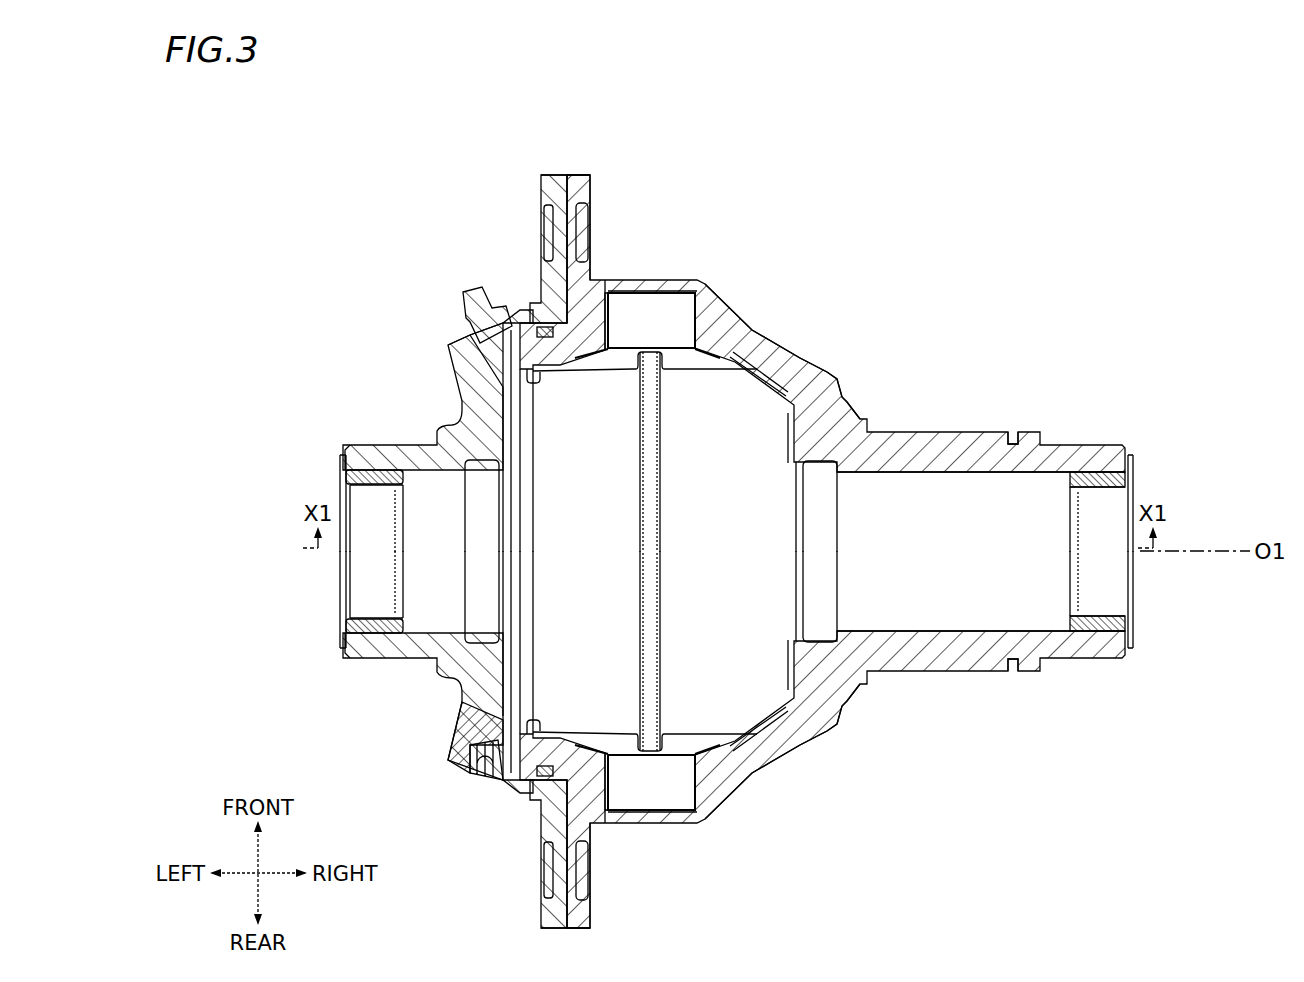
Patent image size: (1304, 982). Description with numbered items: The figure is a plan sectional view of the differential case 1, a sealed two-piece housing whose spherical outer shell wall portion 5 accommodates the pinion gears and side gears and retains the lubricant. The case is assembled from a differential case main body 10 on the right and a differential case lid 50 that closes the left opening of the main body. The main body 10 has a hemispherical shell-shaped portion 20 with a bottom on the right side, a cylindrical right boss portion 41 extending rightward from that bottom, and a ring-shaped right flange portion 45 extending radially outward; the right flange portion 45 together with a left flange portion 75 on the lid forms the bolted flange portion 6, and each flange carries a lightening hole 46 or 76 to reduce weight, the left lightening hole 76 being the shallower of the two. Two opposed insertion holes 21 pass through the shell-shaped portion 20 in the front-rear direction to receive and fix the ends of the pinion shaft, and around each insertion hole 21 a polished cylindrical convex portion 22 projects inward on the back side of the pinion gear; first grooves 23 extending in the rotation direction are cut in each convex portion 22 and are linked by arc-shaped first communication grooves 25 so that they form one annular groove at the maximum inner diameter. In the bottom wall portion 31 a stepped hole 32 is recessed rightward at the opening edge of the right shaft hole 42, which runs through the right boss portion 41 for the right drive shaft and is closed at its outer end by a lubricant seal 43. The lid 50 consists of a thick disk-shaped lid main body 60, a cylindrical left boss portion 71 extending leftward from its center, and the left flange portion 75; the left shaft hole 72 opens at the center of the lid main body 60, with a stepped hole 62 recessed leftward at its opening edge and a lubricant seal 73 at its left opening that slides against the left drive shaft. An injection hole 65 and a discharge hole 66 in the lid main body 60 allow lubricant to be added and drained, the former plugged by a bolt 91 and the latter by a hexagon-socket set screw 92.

The differential case 1 is at (383, 180).
The outer shell wall portion 5 is at (722, 298).
The flange portion 6 is at (611, 131).
The differential case main body 10 is at (806, 360).
The hemispherical shell-shaped portion 20 is at (752, 330).
The insertion hole 21 is at (693, 320).
The convex portion 22 is at (733, 365).
The first groove 23 is at (652, 360).
The first communication groove 25 is at (652, 547).
The bottom wall portion 31 is at (830, 417).
The stepped hole 32 is at (822, 470).
The right boss portion 41 is at (958, 675).
The right shaft hole 42 is at (1022, 625).
The lubricant seal 43 is at (1100, 640).
The right flange portion 45 is at (580, 185).
The lightening hole 46 is at (583, 236).
The differential case lid 50 is at (436, 415).
The lid main body 60 is at (452, 714).
The stepped hole 62 is at (483, 463).
The injection hole 65 is at (497, 371).
The discharge hole 66 is at (458, 757).
The left boss portion 71 is at (360, 444).
The left shaft hole 72 is at (433, 633).
The lubricant seal 73 is at (348, 628).
The left flange portion 75 is at (553, 185).
The lightening hole 76 is at (549, 236).
The bolt 91 is at (463, 297).
The set screw 92 is at (487, 777).